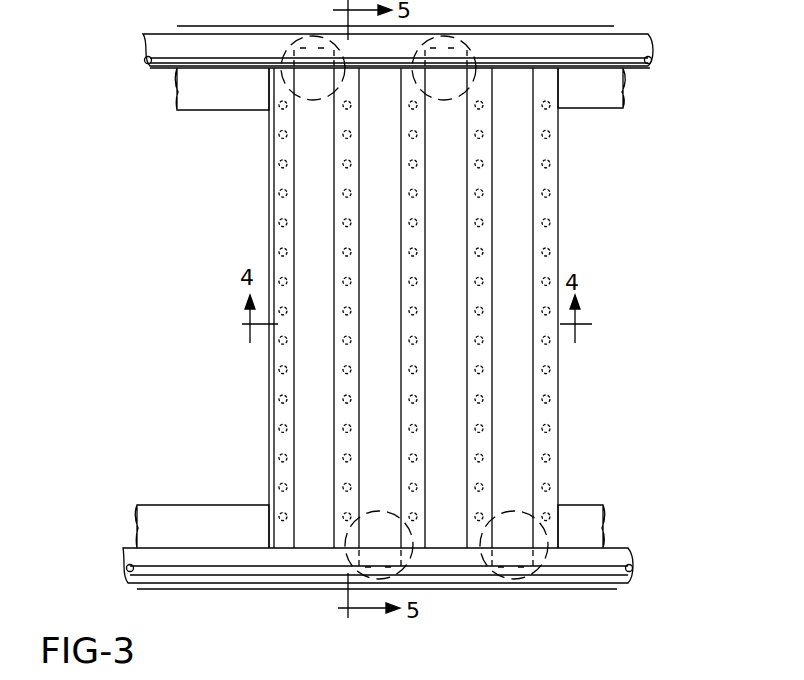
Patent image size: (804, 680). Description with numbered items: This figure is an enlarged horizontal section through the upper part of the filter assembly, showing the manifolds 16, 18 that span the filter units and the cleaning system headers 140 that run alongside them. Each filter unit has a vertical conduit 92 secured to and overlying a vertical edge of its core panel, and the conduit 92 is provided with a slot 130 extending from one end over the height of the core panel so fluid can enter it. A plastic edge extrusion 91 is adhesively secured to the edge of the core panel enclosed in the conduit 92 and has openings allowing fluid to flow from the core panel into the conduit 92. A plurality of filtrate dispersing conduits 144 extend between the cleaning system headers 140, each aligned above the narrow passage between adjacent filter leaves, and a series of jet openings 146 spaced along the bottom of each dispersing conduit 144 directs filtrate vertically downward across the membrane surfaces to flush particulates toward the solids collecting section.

The manifold 16 is at (196, 476).
The manifold 18 is at (203, 94).
The plastic edge extrusion 91 is at (527, 152).
The conduit 92 is at (348, 548).
The slot 130 is at (527, 512).
The cleaning system header 140 is at (560, 586).
The filtrate dispersing conduit 144 is at (280, 174).
The jet opening 146 is at (280, 251).